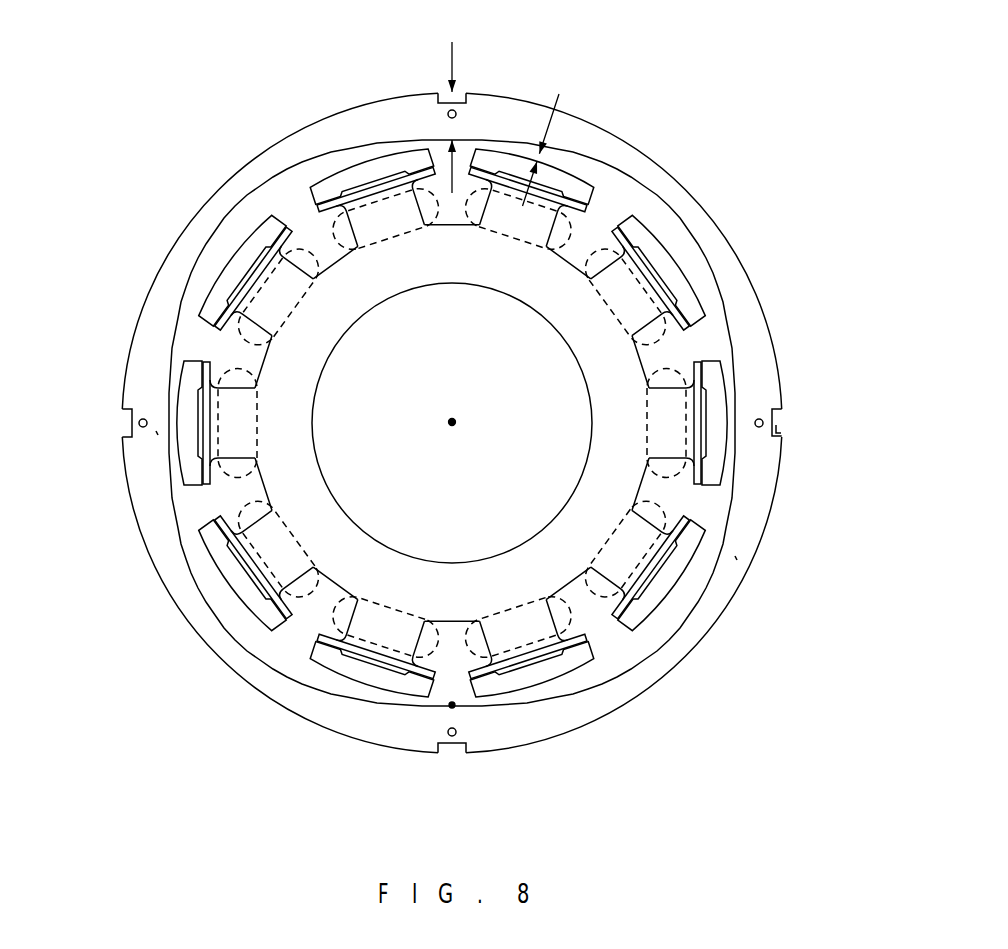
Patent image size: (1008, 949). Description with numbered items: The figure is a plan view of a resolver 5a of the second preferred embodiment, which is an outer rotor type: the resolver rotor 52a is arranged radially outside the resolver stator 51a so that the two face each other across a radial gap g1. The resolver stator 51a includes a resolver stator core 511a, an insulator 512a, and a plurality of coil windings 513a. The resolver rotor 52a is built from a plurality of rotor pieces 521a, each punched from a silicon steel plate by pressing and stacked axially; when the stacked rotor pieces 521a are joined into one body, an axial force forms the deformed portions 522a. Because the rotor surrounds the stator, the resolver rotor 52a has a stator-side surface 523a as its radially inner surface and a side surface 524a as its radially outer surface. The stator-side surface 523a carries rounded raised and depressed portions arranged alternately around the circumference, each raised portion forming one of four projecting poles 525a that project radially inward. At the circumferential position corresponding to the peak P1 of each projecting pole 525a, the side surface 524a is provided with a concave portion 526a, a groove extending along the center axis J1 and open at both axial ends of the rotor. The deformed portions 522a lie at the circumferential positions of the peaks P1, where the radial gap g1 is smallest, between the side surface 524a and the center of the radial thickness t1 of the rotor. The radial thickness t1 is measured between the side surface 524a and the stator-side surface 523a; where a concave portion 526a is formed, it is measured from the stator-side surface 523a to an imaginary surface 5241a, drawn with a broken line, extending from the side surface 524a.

The resolver 5a is at (98, 102).
The resolver stator 51a is at (63, 230).
The resolver stator core 511a is at (253, 245).
The insulator 512a is at (257, 280).
The coil windings 513a is at (243, 338).
The resolver rotor 52a is at (713, 200).
The rotor pieces 521a is at (733, 558).
The deformed portions 522a is at (758, 428).
The stator-side surface 523a is at (706, 310).
The side surface 524a is at (770, 330).
The imaginary surface 5241a is at (780, 420).
The projecting poles 525a is at (443, 715).
The concave portion 526a is at (778, 436).
The radial thickness t1 is at (446, 62).
The radial gap g1 is at (557, 127).
The center axis J1 is at (450, 421).
The peak P1 is at (452, 705).